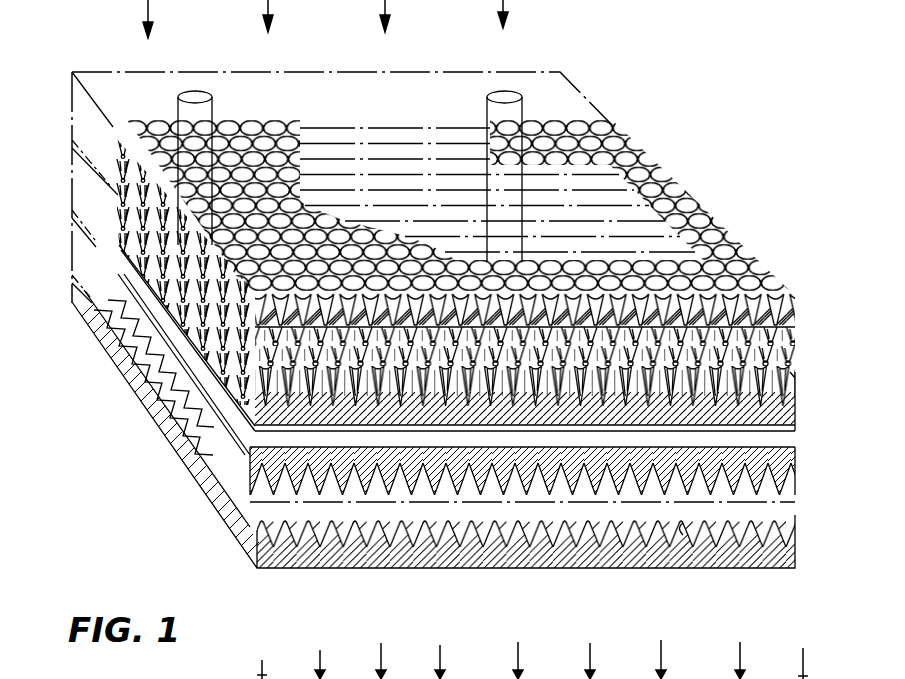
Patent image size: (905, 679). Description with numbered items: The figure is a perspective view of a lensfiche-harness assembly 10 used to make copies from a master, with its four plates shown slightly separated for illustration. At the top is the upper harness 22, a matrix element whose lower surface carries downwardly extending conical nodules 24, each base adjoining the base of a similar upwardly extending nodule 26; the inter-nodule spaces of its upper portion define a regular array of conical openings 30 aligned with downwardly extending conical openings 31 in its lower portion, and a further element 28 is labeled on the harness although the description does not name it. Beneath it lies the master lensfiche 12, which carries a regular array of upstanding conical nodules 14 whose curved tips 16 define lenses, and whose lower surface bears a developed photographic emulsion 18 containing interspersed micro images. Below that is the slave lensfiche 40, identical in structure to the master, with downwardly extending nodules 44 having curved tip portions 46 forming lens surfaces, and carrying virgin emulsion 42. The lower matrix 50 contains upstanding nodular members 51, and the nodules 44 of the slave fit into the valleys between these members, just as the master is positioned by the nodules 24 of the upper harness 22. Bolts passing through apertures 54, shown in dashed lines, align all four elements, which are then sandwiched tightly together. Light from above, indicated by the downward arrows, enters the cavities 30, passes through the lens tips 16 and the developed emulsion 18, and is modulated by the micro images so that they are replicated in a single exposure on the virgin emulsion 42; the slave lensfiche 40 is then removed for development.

The lensfiche-harness assembly 10 is at (697, 150).
The master lensfiche 12 is at (72, 160).
The upstanding conical nodules 14 is at (775, 364).
The nodule tip 16 is at (777, 360).
The photographic emulsion 18 is at (768, 425).
The upper harness 22 is at (558, 100).
The downwardly extending nodules 24 is at (780, 342).
The upwardly extending nodules 26 is at (772, 334).
The intermediate cones 28 is at (745, 328).
The conical openings 30 is at (604, 141).
The downwardly extending conical openings 31 is at (738, 312).
The lower lensfiche 40 is at (72, 239).
The virgin emulsion 42 is at (262, 437).
The downwardly extending nodules 44 is at (655, 483).
The curved tip portions 46 is at (606, 512).
The lower matrix 50 is at (76, 303).
The upstanding nodular members 51 is at (405, 533).
The apertures 54 is at (196, 93).